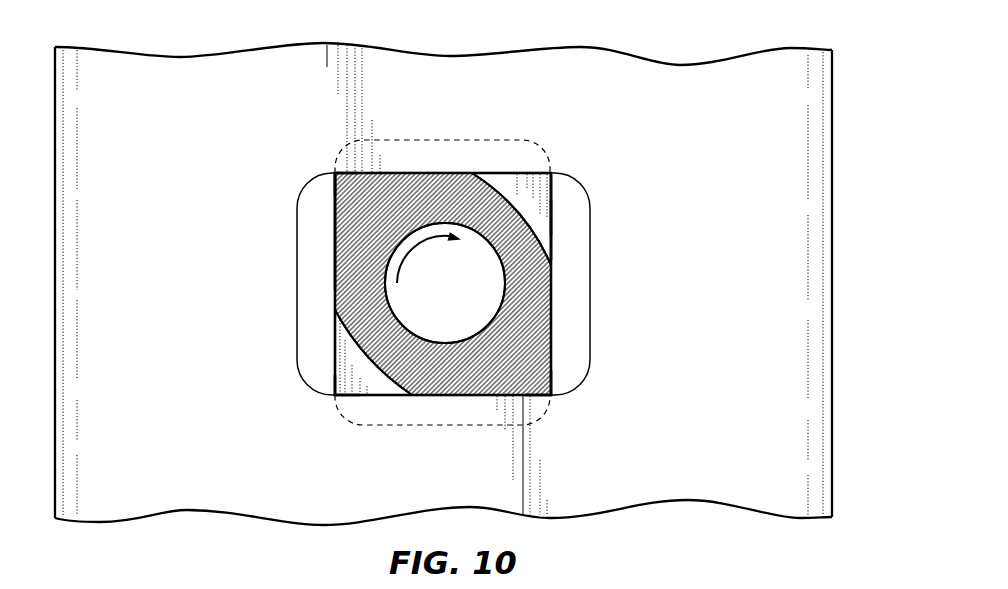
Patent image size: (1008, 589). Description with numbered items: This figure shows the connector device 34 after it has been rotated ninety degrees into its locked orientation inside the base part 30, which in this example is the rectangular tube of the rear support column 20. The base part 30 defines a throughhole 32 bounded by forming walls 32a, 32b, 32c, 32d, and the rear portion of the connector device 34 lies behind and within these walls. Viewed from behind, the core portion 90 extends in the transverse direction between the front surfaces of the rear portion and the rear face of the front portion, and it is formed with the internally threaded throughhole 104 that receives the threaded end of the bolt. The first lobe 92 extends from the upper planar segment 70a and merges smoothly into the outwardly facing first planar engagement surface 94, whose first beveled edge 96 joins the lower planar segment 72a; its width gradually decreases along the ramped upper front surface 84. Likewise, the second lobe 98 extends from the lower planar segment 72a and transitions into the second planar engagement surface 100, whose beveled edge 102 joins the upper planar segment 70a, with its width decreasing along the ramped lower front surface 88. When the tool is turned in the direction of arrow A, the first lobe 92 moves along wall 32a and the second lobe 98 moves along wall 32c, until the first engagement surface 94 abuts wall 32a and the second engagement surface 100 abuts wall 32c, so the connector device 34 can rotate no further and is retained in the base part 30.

The rear support column 20 is at (849, 59).
The base part 30 is at (805, 272).
The throughhole 32 is at (577, 233).
The forming wall 32a is at (567, 183).
The forming wall 32b is at (590, 296).
The forming wall 32c is at (560, 378).
The forming wall 32d is at (297, 295).
The connector device 34 is at (562, 202).
The upper planar segment 70a is at (551, 343).
The lower planar segment 72a is at (335, 257).
The ramped upper front surface 84 is at (510, 182).
The ramped lower front surface 88 is at (347, 378).
The core portion 90 is at (541, 318).
The first lobe 92 is at (551, 216).
The first planar engagement surface 94 is at (419, 172).
The first beveled edge 96 is at (335, 173).
The second lobe 98 is at (388, 373).
The second planar engagement surface 100 is at (467, 397).
The beveled edge 102 is at (545, 398).
The internally threaded throughhole 104 is at (420, 343).